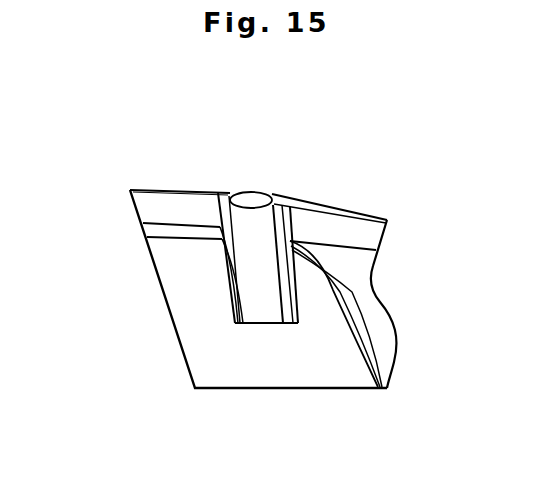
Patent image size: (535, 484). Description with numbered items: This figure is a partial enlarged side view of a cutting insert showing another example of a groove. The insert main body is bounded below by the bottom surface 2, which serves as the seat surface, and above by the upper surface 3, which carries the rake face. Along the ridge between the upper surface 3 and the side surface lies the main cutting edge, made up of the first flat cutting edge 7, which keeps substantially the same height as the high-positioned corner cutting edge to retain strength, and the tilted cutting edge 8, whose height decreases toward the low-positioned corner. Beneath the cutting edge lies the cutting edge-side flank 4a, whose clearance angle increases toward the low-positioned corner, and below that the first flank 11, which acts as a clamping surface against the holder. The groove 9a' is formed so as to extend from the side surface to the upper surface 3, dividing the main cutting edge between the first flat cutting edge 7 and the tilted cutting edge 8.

The bottom surface 2 is at (261, 389).
The upper surface 3 is at (255, 270).
The cutting edge-side flank 4a is at (163, 205).
The first flat cutting edge 7 is at (178, 189).
The tilted cutting edge 8 is at (345, 215).
The groove 9a' is at (300, 169).
The first flank 11 is at (232, 347).